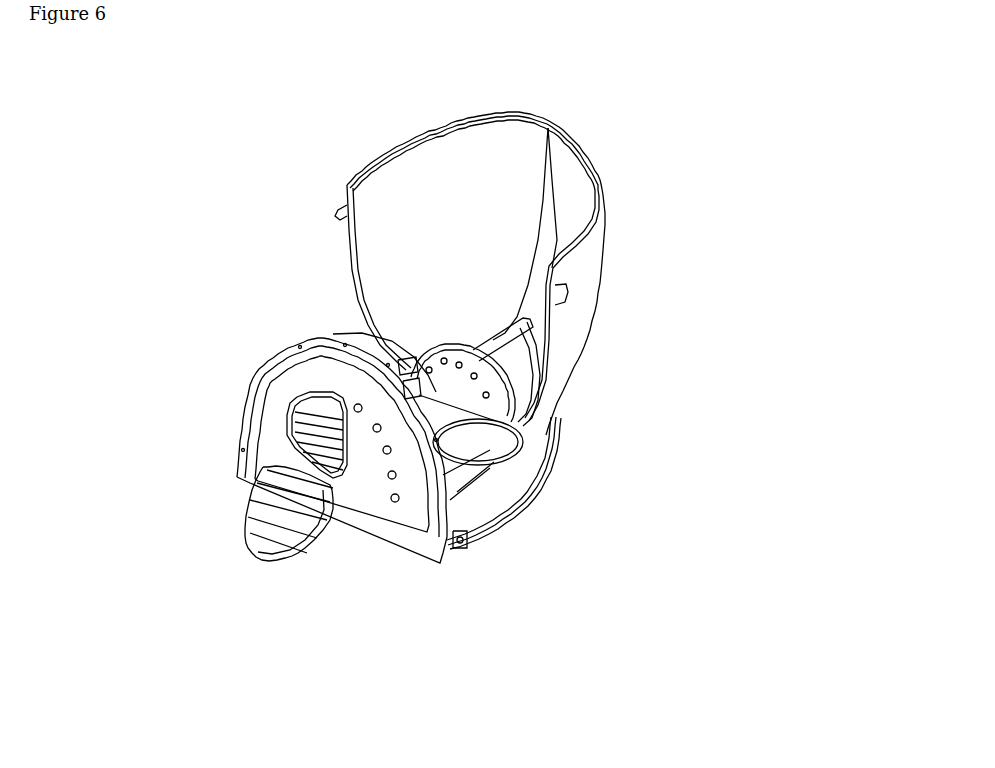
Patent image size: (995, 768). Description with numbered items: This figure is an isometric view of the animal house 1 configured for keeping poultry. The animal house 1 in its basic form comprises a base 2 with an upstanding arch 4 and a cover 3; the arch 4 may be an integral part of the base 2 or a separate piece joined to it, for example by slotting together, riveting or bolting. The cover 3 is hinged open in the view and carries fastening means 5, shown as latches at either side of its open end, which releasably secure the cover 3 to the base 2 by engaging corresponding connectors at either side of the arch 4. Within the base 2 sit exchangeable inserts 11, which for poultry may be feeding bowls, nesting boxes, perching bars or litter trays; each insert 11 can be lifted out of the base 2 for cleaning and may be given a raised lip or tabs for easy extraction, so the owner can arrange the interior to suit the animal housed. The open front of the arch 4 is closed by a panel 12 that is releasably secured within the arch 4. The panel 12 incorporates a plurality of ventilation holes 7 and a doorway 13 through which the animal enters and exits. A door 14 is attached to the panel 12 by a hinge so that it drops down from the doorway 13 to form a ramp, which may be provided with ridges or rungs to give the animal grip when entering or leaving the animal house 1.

The animal house 1 is at (415, 260).
The base 2 is at (526, 495).
The cover 3 is at (591, 262).
The arch 4 is at (252, 433).
The fastening means 5 is at (337, 212).
The ventilation holes 7 is at (383, 452).
The exchangeable inserts 11 is at (490, 445).
The panel 12 is at (299, 388).
The doorway 13 is at (295, 420).
The door 14 is at (258, 532).